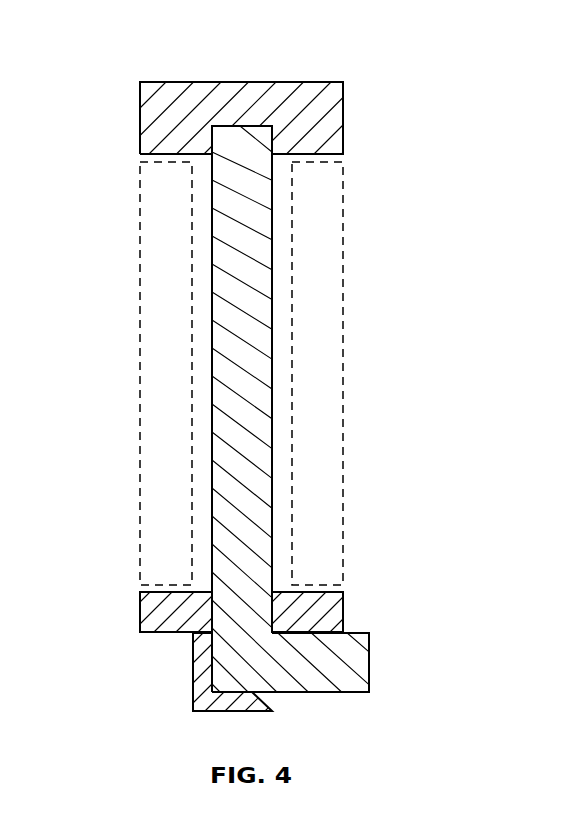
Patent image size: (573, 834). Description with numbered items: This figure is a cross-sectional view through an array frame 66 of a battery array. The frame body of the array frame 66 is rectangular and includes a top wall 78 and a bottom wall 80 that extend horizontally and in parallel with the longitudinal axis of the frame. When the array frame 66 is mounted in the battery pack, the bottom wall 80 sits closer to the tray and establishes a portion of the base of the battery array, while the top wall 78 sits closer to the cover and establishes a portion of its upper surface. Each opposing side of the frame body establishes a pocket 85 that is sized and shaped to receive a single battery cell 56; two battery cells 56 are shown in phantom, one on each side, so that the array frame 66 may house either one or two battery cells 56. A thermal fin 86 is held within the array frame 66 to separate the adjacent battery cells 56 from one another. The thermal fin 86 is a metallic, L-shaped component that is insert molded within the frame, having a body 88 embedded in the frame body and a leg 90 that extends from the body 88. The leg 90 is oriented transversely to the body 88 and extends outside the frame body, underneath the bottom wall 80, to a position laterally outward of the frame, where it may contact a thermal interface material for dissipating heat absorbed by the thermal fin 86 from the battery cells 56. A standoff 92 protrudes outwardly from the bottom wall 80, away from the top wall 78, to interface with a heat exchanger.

The array frame 66 is at (228, 68).
The top wall 78 is at (260, 92).
The pocket 85 is at (200, 160).
The battery cell 56 is at (153, 312).
The thermal fin 86 is at (256, 290).
The body 88 is at (265, 420).
The leg 90 is at (353, 662).
The bottom wall 80 is at (155, 617).
The standoff 92 is at (202, 695).